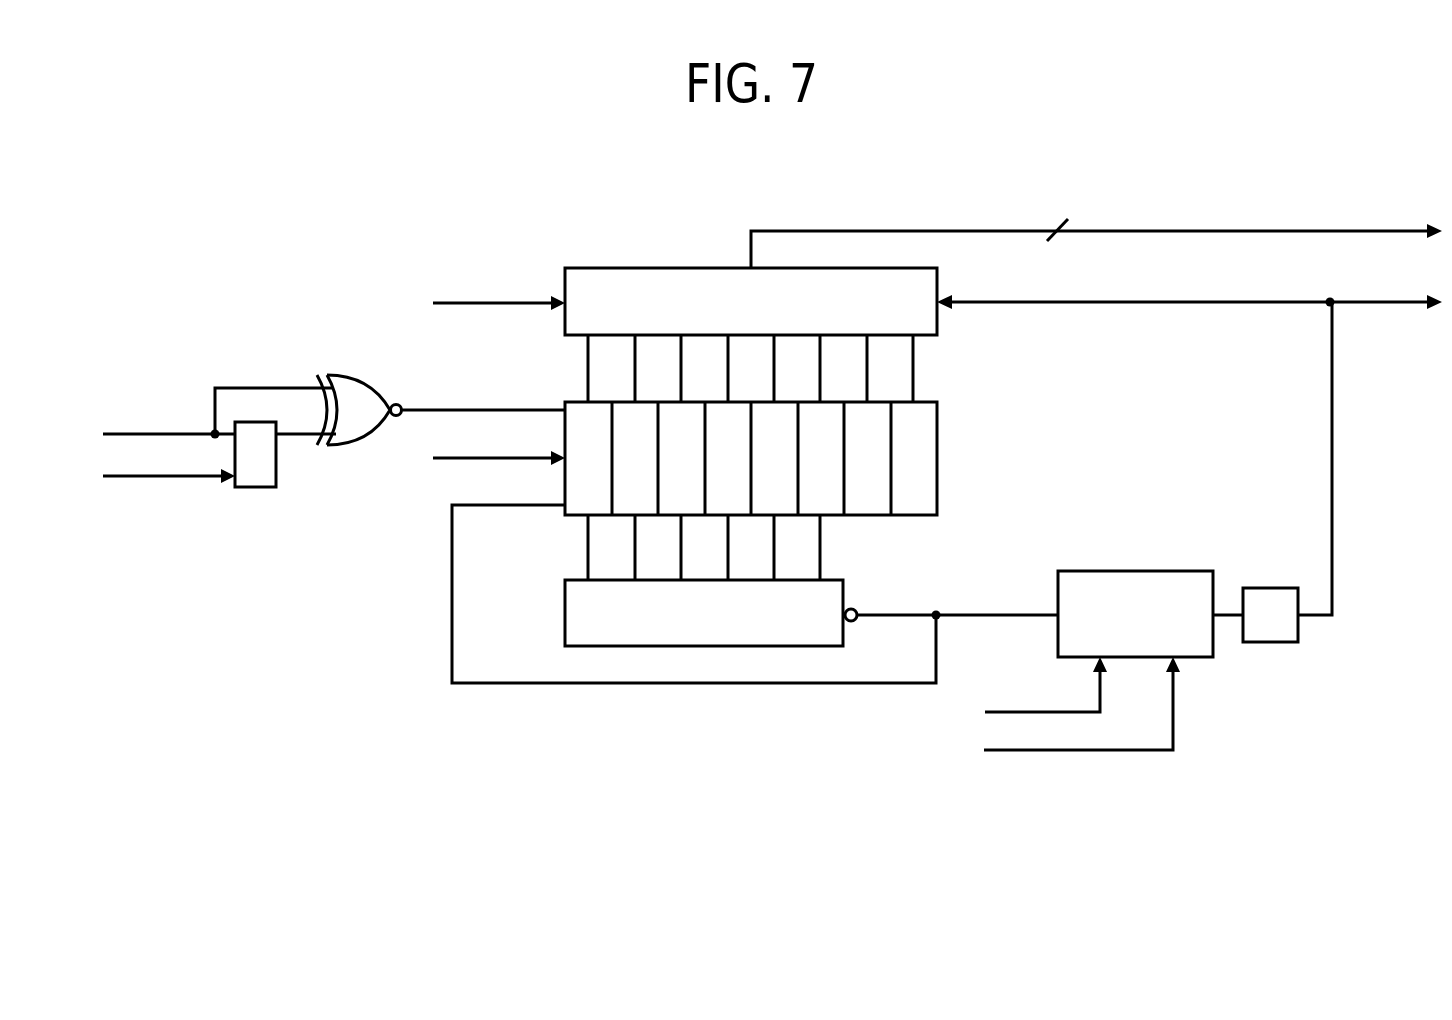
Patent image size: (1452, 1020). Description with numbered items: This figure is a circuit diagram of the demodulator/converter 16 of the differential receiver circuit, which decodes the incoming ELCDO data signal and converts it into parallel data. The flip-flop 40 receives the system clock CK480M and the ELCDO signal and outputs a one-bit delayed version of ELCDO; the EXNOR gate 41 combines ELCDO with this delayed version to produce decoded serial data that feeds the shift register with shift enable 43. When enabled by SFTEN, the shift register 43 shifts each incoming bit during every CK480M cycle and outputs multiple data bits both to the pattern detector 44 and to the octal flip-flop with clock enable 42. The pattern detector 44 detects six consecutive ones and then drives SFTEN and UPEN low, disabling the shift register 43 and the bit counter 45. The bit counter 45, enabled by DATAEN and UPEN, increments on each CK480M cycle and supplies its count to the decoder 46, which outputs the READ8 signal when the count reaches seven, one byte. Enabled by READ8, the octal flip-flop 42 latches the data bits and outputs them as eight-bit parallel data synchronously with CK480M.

The demodulator/converter 16 is at (466, 158).
The flip-flop 40 is at (258, 487).
The EXNOR gate 41 is at (362, 378).
The octal flip-flop with clock enable 42 is at (938, 283).
The shift register with shift enable 43 is at (938, 433).
The pattern detector 44 is at (844, 598).
The bit counter 45 is at (1182, 571).
The decoder 46 is at (1270, 588).